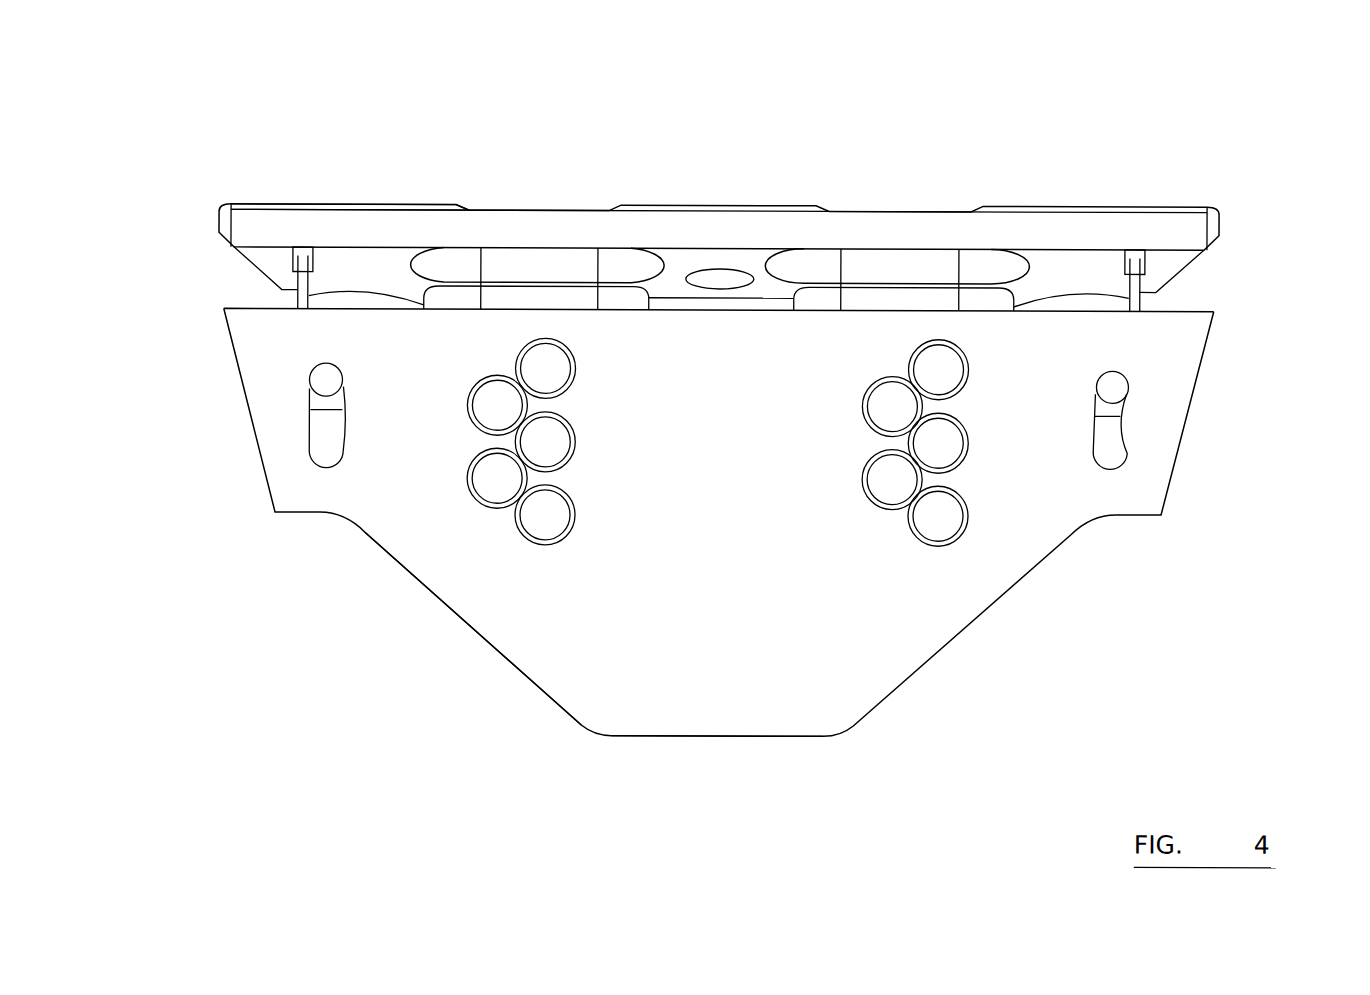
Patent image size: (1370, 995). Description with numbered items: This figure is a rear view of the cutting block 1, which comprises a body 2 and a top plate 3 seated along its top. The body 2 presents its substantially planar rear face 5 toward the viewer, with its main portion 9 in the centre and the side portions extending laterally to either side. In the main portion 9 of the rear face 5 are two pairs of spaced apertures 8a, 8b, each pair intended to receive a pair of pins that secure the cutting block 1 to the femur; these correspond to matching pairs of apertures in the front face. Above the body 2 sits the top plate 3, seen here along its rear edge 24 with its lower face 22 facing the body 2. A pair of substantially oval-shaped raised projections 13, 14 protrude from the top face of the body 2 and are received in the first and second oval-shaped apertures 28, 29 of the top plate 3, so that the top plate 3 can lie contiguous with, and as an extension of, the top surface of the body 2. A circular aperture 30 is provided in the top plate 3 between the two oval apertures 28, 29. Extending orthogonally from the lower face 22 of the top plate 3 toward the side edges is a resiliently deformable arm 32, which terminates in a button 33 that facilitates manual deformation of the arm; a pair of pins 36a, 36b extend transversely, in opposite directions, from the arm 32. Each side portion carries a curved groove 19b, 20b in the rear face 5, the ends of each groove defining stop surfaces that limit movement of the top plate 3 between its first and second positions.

The cutting block 1 is at (850, 163).
The body 2 is at (475, 609).
The top plate 3 is at (1150, 187).
The rear face 5 is at (617, 628).
The main portion 9 is at (715, 648).
The spaced apertures 8a is at (495, 482).
The spaced apertures 8b is at (942, 443).
The oval-shaped raised projection 13 is at (990, 298).
The oval-shaped raised projection 14 is at (550, 298).
The curved groove 19b is at (1112, 457).
The curved groove 20b is at (325, 452).
The lower face 22 is at (353, 272).
The rear edge 24 is at (325, 222).
The first oval-shaped aperture 28 is at (902, 267).
The second oval-shaped aperture 29 is at (513, 262).
The circular aperture 30 is at (719, 279).
The second resiliently deformable arm 32 is at (295, 300).
The button 33 is at (1143, 303).
The pin 36a is at (1113, 385).
The pin 36b is at (327, 380).